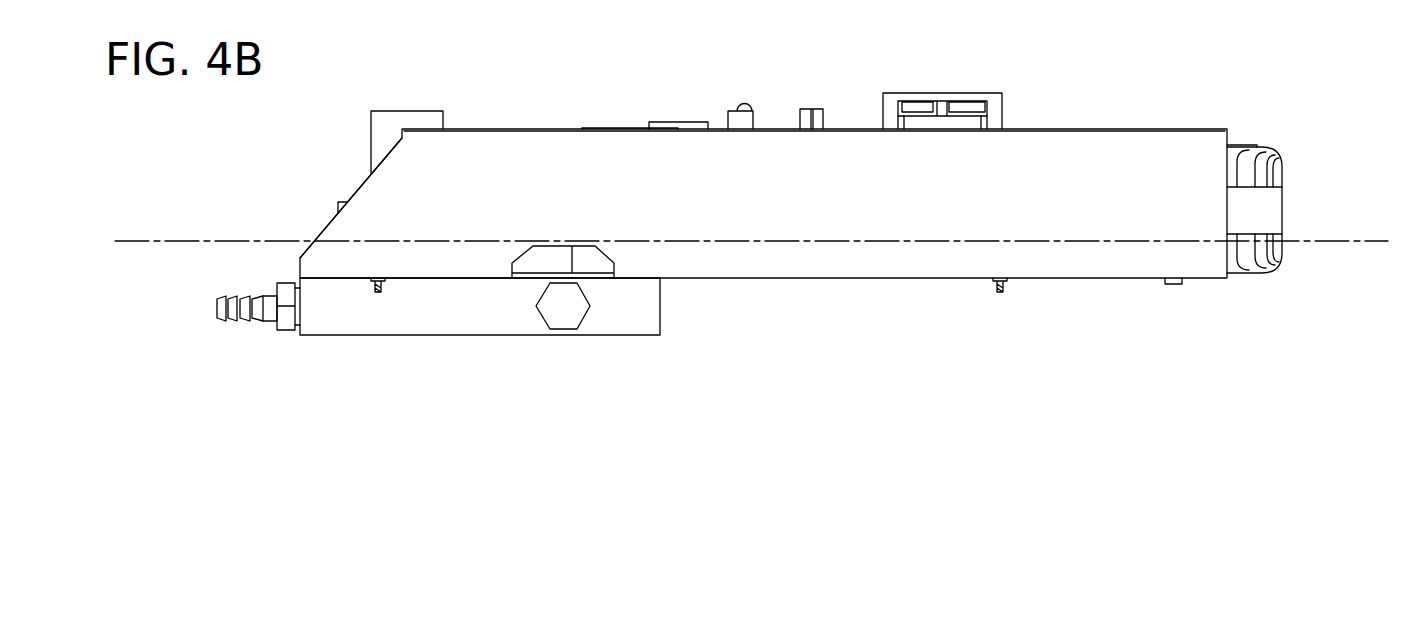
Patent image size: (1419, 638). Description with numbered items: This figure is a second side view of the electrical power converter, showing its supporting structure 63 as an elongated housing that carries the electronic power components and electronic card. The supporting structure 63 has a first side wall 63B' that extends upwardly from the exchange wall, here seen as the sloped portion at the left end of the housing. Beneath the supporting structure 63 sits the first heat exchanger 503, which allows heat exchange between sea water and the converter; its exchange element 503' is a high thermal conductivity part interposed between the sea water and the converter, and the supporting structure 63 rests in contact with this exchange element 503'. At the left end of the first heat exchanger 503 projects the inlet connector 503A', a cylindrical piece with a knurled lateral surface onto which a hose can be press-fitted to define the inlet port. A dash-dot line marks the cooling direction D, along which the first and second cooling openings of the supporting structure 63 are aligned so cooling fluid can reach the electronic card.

The supporting structure 63 is at (1118, 178).
The first side wall 63B' is at (334, 193).
The first heat exchanger 503 is at (437, 345).
The exchange element 503' is at (503, 331).
The inlet connector 503A' is at (203, 306).
The cooling direction D is at (1342, 241).